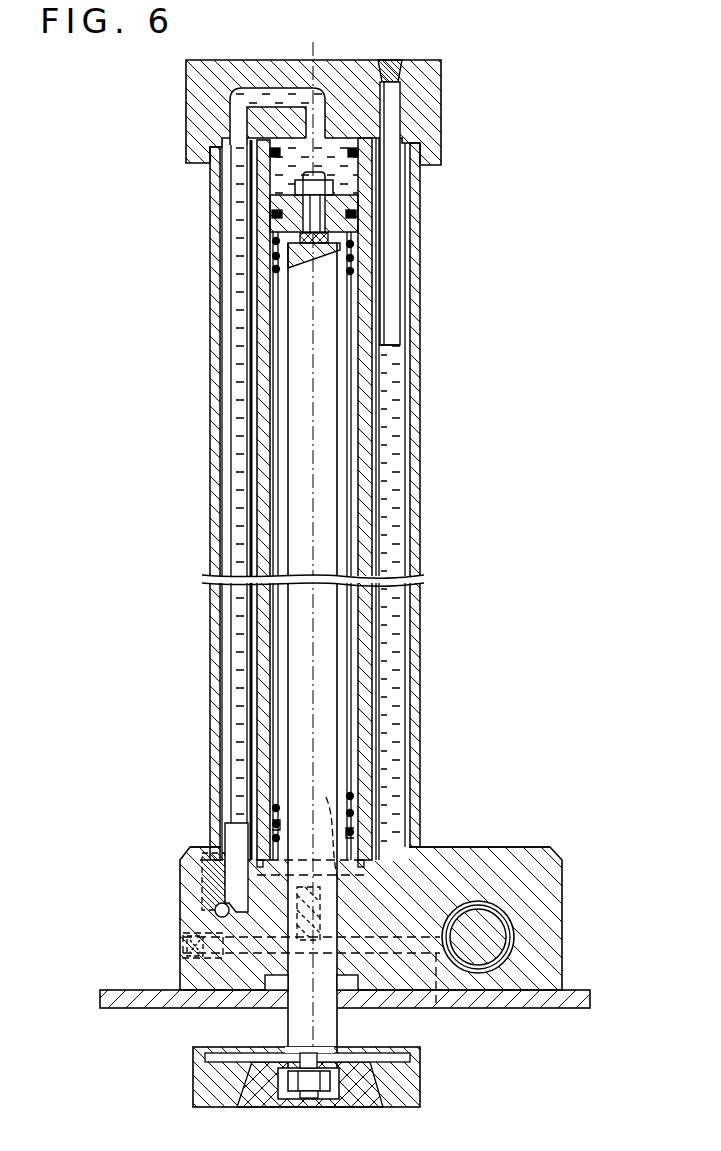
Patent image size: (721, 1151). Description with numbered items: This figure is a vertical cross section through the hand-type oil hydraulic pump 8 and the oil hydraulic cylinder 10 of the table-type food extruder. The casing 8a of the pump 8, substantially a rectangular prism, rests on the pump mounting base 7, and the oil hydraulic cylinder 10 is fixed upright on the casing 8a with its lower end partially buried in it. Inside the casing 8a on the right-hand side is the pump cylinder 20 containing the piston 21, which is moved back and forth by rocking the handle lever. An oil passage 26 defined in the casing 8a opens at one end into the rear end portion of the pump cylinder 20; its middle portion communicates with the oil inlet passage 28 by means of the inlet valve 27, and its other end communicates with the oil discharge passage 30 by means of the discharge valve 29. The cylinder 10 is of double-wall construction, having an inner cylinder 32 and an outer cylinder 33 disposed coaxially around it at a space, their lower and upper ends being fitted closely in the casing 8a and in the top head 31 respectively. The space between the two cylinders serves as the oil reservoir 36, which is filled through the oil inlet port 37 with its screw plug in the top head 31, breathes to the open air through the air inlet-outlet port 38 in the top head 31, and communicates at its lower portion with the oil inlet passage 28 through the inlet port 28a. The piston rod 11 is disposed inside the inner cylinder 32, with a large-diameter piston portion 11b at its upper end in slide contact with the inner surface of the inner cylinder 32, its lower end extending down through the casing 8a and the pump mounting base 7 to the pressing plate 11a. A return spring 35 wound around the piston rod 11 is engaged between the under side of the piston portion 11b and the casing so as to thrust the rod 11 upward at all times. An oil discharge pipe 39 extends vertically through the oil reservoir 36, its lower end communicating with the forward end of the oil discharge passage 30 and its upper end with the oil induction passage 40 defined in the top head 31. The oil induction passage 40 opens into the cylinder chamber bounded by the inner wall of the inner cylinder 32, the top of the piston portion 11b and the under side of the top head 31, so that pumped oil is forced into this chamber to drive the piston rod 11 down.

The pump mounting base 7 is at (518, 1008).
The hand-type oil hydraulic pump 8 is at (562, 856).
The casing 8a is at (485, 858).
The oil hydraulic cylinder 10 is at (432, 284).
The piston rod 11 is at (300, 332).
The pressing plate 11a is at (195, 1076).
The large-diameter piston portion 11b is at (243, 212).
The pump cylinder 20 is at (486, 904).
The piston 21 is at (500, 940).
The oil passage 26 is at (441, 1004).
The inlet valve 27 is at (318, 910).
The oil inlet passage 28 is at (296, 845).
The inlet port 28a is at (315, 828).
The discharge valve 29 is at (190, 922).
The oil discharge passage 30 is at (216, 906).
The top head 31 is at (441, 92).
The inner cylinder 32 is at (372, 436).
The outer cylinder 33 is at (412, 390).
The return spring 35 is at (258, 265).
The oil reservoir 36 is at (400, 252).
The oil inlet port 37 is at (400, 88).
The air inlet-outlet port 38 is at (392, 346).
The oil discharge pipe 39 is at (318, 66).
The oil induction passage 40 is at (272, 98).